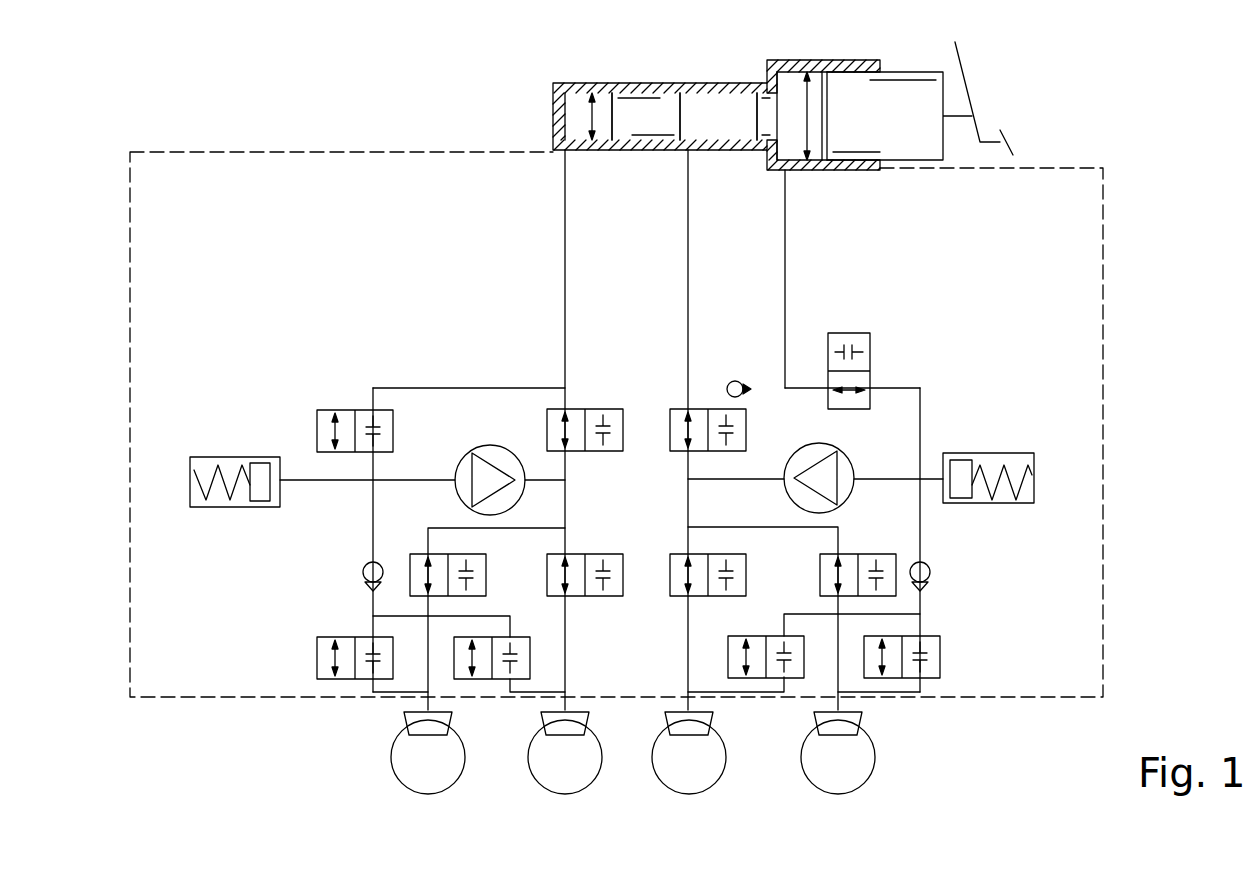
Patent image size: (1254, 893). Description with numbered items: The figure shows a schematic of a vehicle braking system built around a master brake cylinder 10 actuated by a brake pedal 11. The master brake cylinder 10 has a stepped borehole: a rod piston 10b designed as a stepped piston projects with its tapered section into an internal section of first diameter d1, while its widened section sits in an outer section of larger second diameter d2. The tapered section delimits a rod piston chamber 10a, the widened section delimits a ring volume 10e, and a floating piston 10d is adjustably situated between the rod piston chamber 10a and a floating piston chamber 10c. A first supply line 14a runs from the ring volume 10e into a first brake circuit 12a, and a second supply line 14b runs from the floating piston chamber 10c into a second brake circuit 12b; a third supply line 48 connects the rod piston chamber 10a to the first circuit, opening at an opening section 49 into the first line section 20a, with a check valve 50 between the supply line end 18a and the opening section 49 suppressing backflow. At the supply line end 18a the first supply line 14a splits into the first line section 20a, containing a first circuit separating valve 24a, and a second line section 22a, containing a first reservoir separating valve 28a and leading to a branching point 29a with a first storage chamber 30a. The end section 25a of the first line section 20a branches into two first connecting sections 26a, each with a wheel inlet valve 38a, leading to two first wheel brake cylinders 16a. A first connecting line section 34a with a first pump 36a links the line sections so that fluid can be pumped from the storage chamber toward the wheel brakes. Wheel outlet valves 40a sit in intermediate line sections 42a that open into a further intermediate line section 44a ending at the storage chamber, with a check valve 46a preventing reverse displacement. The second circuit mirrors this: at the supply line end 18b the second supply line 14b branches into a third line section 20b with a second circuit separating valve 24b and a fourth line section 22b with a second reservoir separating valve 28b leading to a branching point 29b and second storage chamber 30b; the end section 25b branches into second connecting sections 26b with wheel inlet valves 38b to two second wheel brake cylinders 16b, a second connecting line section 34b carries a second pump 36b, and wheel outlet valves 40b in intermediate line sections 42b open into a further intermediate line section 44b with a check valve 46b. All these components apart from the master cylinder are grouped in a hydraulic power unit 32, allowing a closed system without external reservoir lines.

The master brake cylinder 10 is at (536, 97).
The rod piston chamber 10a is at (712, 108).
The rod piston 10b is at (905, 82).
The floating piston chamber 10c is at (572, 105).
The floating piston 10d is at (640, 100).
The ring volume 10e is at (790, 75).
The brake pedal 11 is at (968, 92).
The first diameter d1 is at (590, 118).
The second diameter d2 is at (811, 128).
The first brake circuit 12a is at (688, 263).
The second brake circuit 12b is at (567, 300).
The first supply line 14a is at (787, 240).
The second supply line 14b is at (565, 232).
The first wheel brake cylinder 16a is at (713, 745).
The second wheel brake cylinder 16b is at (452, 745).
The supply line end 18a is at (786, 386).
The supply line end 18b is at (561, 383).
The first line section 20a is at (686, 395).
The third line section 20b is at (568, 392).
The second line section 22a is at (920, 388).
The fourth line section 22b is at (425, 386).
The first circuit separating valve 24a is at (748, 432).
The second circuit separating valve 24b is at (547, 435).
The end section 25a is at (686, 522).
The end section 25b is at (570, 522).
The first connecting section 26a is at (688, 528).
The second connecting section 26b is at (485, 528).
The first reservoir separating valve 28a is at (870, 345).
The second reservoir separating valve 28b is at (345, 410).
The branching point 29a is at (921, 466).
The branching point 29b is at (370, 492).
The first storage chamber 30a is at (1020, 453).
The second storage chamber 30b is at (228, 457).
The hydraulic power unit 32 is at (148, 152).
The first connecting line section 34a is at (735, 481).
The second connecting line section 34b is at (415, 480).
The first pump 36a is at (833, 450).
The second pump 36b is at (468, 455).
The wheel inlet valve 38a is at (746, 572).
The wheel inlet valve 38b is at (486, 575).
The wheel outlet valve 40a is at (728, 660).
The wheel outlet valve 40b is at (317, 660).
The intermediate line section 42a is at (920, 626).
The intermediate line section 42b is at (373, 628).
The further intermediate line section 44a is at (920, 535).
The further intermediate line section 44b is at (373, 540).
The check valve 46a is at (930, 572).
The check valve 46b is at (362, 575).
The third supply line 48 is at (690, 205).
The opening section 49 is at (685, 383).
The check valve 50 is at (736, 381).